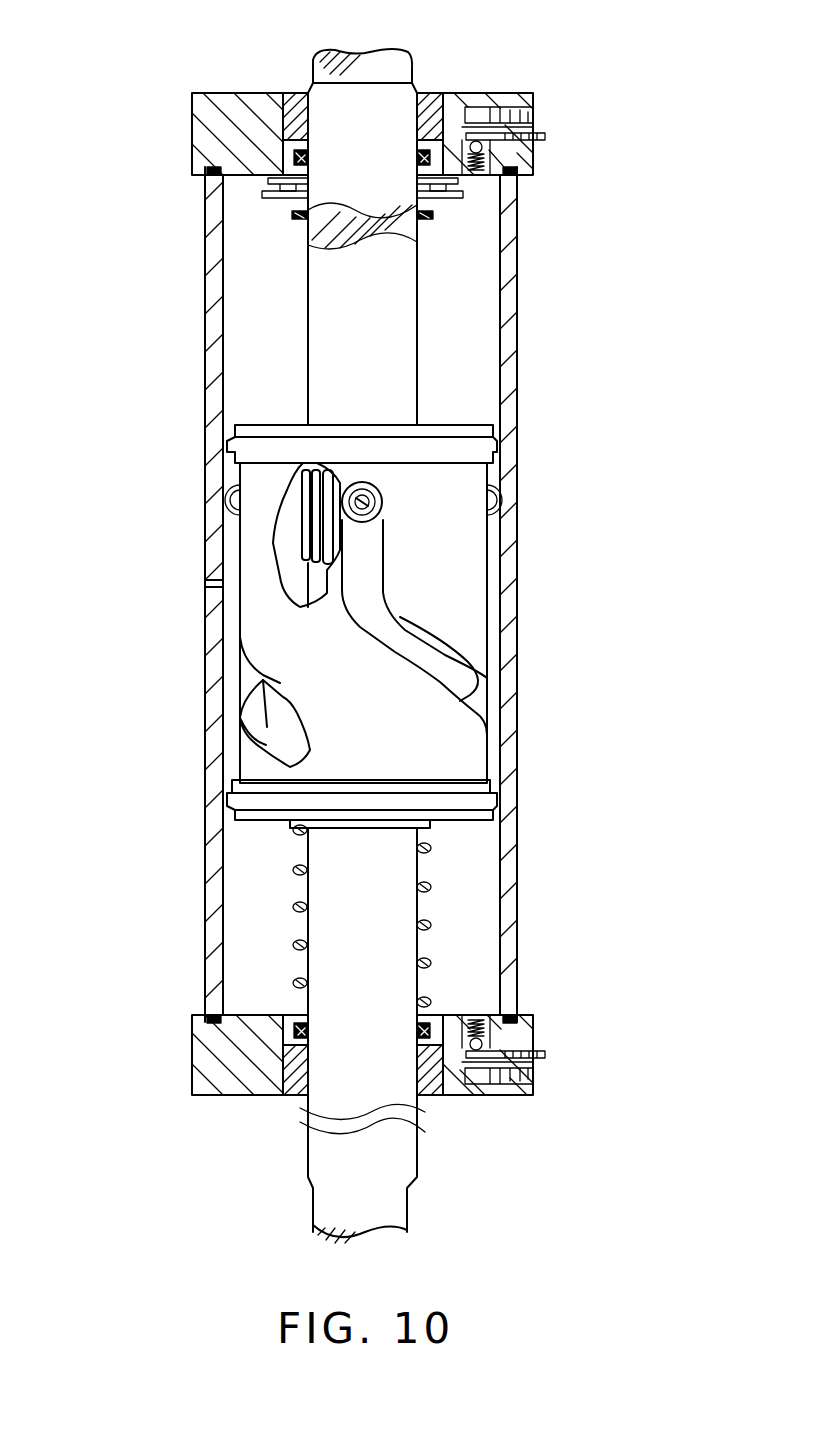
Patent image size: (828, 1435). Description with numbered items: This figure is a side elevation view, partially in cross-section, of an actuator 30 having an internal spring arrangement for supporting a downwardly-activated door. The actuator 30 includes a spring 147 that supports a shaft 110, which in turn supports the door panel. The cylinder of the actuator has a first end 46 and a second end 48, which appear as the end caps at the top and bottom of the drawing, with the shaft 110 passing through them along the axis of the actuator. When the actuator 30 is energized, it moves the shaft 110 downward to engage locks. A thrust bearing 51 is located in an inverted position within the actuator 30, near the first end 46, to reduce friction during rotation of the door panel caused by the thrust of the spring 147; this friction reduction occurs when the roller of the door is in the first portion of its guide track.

The actuator 30 is at (392, 646).
The first end 46 is at (193, 143).
The second end 48 is at (193, 1057).
The thrust bearing 51 is at (443, 200).
The shaft 110 is at (322, 887).
The spring 147 is at (428, 925).